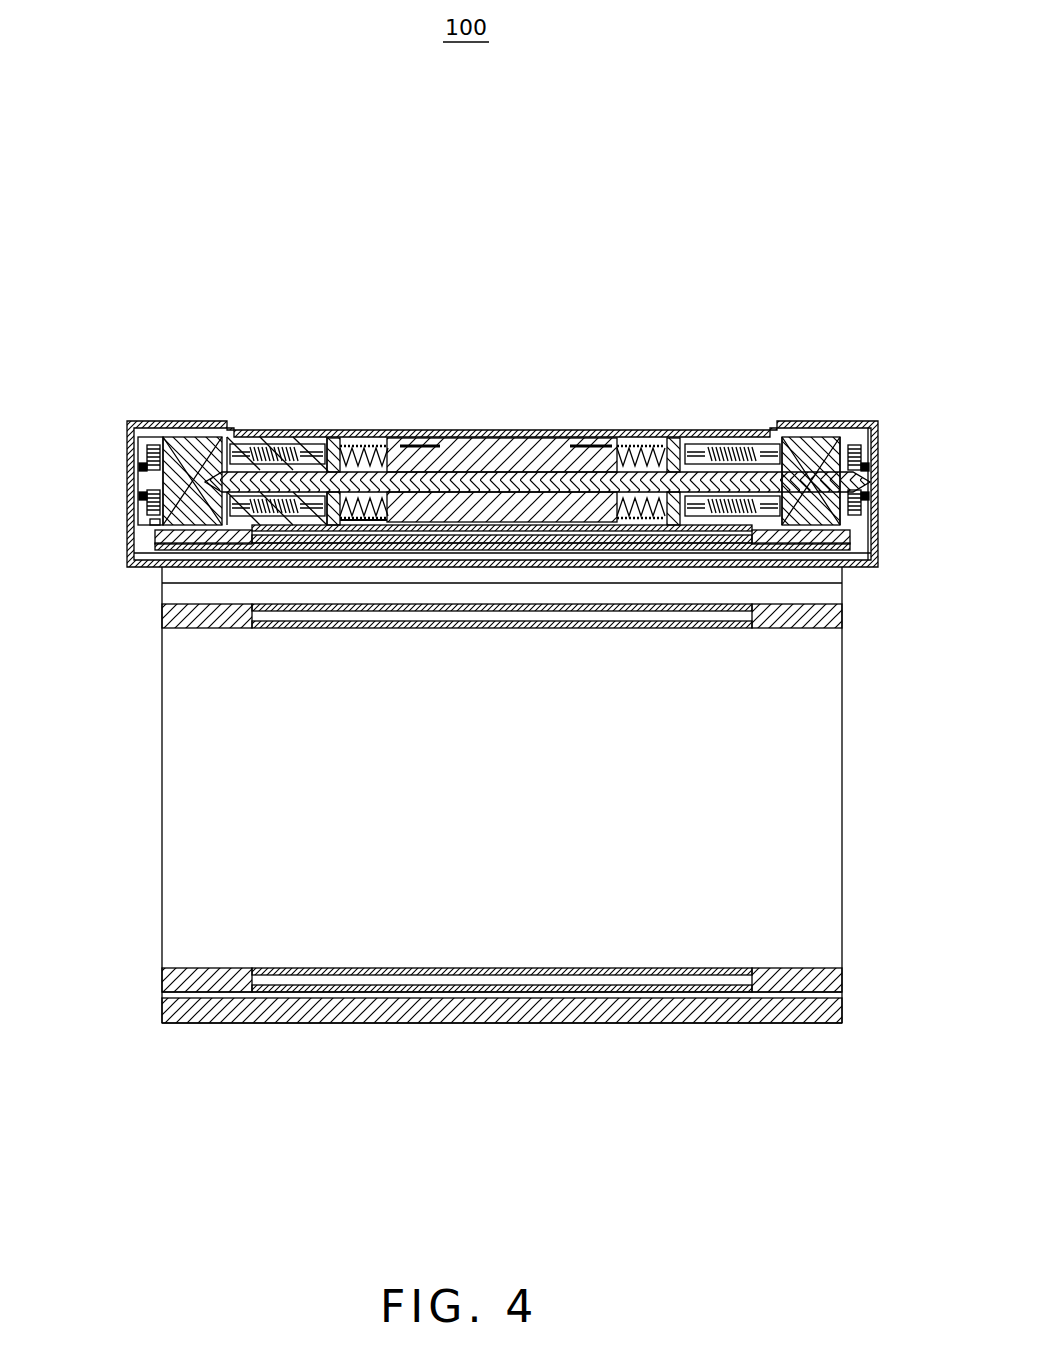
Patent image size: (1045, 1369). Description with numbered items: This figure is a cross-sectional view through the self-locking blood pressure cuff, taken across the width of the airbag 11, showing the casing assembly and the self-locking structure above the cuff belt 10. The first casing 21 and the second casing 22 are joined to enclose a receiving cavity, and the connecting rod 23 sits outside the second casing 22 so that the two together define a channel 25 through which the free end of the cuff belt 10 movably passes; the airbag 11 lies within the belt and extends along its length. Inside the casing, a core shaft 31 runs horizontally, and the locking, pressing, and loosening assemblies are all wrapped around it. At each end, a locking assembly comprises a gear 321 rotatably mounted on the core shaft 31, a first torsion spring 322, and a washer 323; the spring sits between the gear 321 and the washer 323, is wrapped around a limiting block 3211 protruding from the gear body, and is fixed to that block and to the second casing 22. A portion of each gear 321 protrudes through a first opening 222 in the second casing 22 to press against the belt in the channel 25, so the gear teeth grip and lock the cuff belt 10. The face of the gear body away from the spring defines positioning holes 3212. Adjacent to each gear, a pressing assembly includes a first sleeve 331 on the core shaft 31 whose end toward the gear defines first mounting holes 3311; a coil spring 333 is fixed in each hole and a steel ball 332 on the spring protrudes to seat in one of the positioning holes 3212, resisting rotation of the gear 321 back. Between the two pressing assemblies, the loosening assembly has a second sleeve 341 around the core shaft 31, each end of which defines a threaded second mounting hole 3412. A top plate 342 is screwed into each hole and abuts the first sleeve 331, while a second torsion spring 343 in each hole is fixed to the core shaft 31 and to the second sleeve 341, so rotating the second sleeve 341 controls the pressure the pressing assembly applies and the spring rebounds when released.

The cuff belt 10 is at (822, 757).
The airbag 11 is at (605, 985).
The first casing 21 is at (873, 446).
The second casing 22 is at (874, 560).
The first opening 222 is at (818, 522).
The connecting rod 23 is at (830, 566).
The channel 25 is at (762, 563).
The core shaft 31 is at (583, 482).
The gear 321 is at (180, 456).
The first torsion spring 322 is at (147, 460).
The washer 323 is at (141, 470).
The limiting block 3211 is at (141, 497).
The positioning hole 3212 is at (150, 536).
The first sleeve 331 is at (291, 462).
The steel ball 332 is at (185, 455).
The coil spring 333 is at (262, 450).
The first mounting hole 3311 is at (265, 510).
The second sleeve 341 is at (366, 502).
The second mounting hole 3412 is at (354, 512).
The top plate 342 is at (331, 470).
The second torsion spring 343 is at (372, 452).